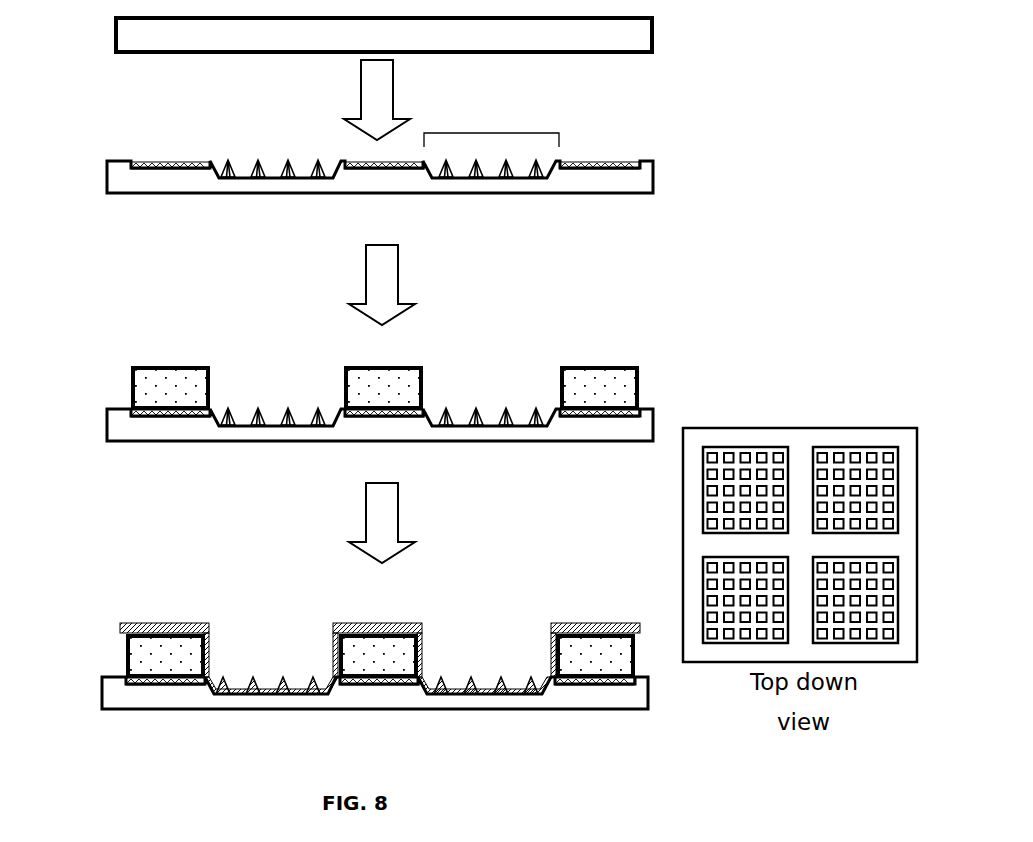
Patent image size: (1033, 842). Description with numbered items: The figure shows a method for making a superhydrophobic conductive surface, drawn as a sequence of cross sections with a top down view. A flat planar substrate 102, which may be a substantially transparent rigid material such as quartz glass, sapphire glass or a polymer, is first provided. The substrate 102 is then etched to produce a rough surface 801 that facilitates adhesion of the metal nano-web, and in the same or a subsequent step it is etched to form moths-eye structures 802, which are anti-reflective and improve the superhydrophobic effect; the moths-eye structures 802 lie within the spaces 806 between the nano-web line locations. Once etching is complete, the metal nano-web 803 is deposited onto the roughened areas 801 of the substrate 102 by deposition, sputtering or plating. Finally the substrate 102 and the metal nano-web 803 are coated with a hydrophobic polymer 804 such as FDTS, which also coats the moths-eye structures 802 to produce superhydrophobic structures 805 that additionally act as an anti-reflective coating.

The substrate 102 is at (113, 19).
The rough surface 801 is at (147, 161).
The moths-eye structures 802 is at (293, 160).
The metal nano-web 803 is at (131, 389).
The hydrophobic polymer 804 is at (193, 628).
The superhydrophobic structures 805 is at (292, 679).
The spaces 806 is at (493, 97).